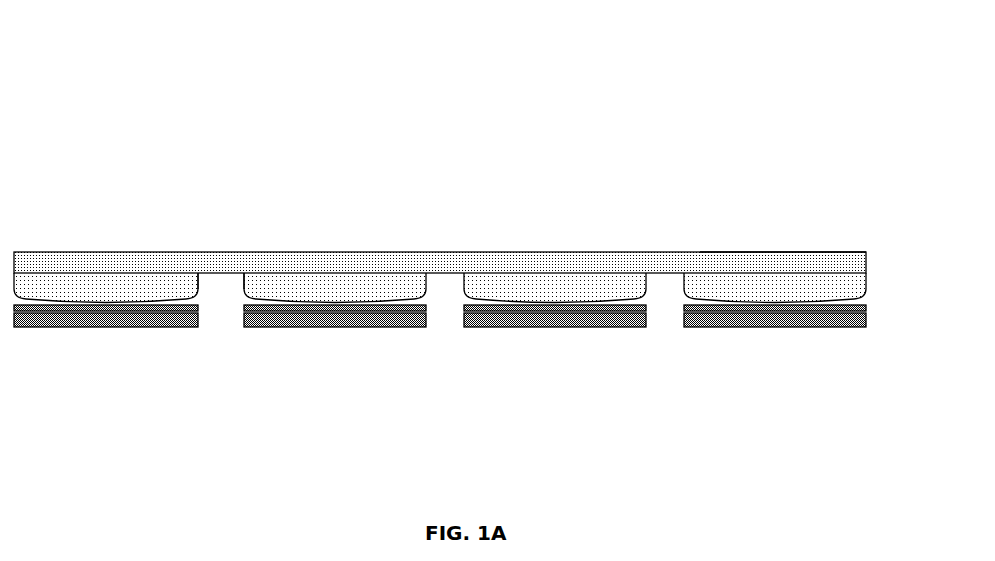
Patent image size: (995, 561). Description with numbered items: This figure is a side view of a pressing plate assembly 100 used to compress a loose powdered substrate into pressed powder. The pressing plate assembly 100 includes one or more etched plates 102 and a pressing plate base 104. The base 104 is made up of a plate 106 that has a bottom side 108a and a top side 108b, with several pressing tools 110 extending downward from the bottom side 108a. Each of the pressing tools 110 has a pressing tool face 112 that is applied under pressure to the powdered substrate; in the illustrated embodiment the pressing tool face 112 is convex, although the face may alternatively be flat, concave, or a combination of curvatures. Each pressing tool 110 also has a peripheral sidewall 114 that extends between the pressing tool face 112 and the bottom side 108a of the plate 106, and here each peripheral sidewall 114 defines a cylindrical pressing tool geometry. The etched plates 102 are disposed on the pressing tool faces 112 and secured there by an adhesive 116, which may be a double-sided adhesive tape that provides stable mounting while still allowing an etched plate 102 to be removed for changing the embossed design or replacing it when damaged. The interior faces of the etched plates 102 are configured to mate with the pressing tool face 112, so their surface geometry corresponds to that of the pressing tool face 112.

The pressing plate assembly 100 is at (230, 150).
The etched plates 102 is at (92, 323).
The pressing plate base 104 is at (365, 233).
The plate 106 is at (387, 267).
The bottom side 108a is at (208, 282).
The top side 108b is at (773, 250).
The pressing tools 110 is at (258, 282).
The pressing tool face 112 is at (243, 298).
The peripheral sidewall 114 is at (845, 285).
The adhesive 116 is at (402, 308).